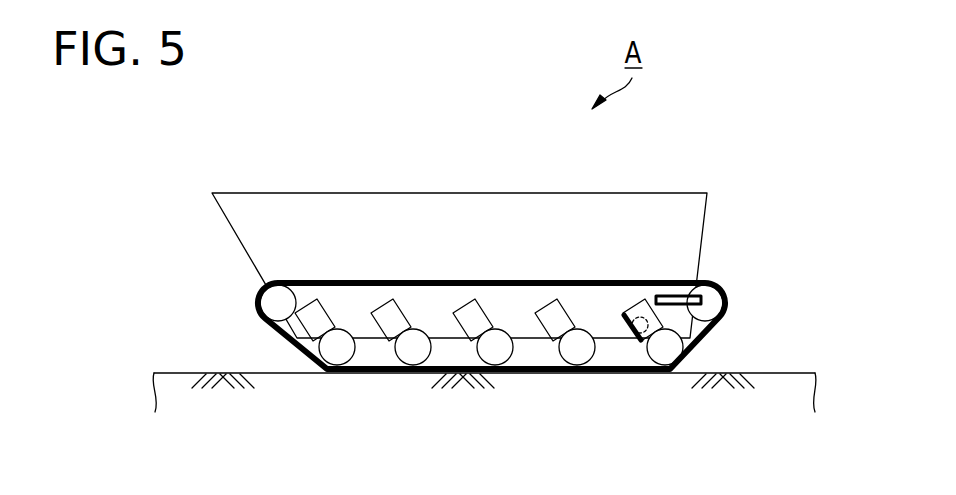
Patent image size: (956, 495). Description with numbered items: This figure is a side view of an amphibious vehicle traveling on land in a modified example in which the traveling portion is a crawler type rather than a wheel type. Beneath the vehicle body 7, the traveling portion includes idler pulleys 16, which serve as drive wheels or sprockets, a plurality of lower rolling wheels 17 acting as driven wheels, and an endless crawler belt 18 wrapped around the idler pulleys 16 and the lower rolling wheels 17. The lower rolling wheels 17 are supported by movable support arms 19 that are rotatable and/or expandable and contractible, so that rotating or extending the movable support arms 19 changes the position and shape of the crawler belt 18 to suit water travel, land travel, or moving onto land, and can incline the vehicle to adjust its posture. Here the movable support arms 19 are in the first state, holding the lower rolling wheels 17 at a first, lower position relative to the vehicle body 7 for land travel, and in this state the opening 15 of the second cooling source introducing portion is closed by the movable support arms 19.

The vehicle body 7 is at (412, 193).
The opening 15 is at (626, 341).
The idler pulleys 16 is at (259, 300).
The lower rolling wheels 17 is at (413, 360).
The crawler belt 18 is at (594, 279).
The movable support arms 19 is at (458, 303).